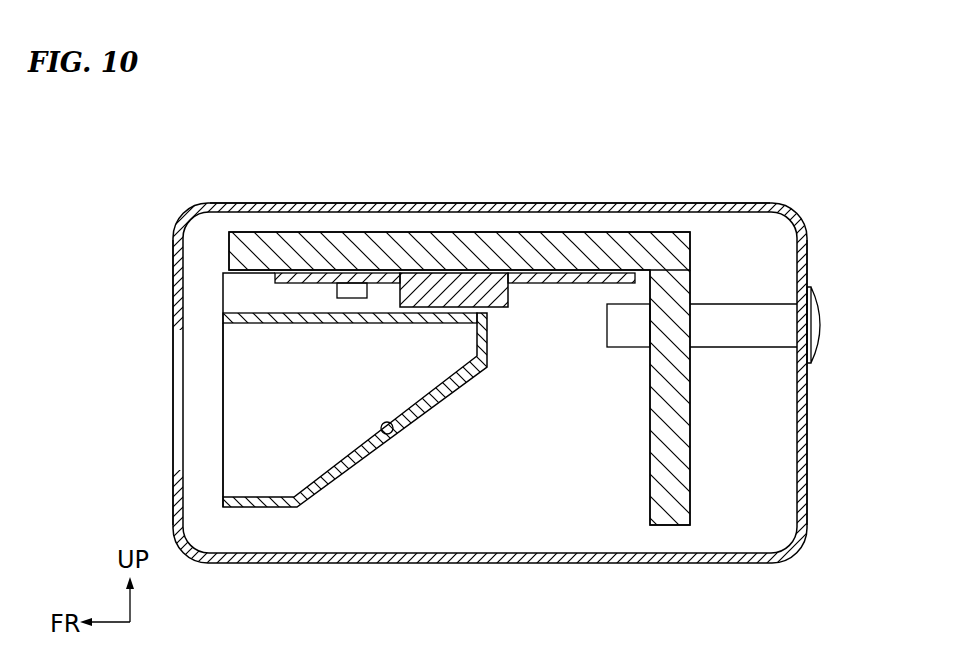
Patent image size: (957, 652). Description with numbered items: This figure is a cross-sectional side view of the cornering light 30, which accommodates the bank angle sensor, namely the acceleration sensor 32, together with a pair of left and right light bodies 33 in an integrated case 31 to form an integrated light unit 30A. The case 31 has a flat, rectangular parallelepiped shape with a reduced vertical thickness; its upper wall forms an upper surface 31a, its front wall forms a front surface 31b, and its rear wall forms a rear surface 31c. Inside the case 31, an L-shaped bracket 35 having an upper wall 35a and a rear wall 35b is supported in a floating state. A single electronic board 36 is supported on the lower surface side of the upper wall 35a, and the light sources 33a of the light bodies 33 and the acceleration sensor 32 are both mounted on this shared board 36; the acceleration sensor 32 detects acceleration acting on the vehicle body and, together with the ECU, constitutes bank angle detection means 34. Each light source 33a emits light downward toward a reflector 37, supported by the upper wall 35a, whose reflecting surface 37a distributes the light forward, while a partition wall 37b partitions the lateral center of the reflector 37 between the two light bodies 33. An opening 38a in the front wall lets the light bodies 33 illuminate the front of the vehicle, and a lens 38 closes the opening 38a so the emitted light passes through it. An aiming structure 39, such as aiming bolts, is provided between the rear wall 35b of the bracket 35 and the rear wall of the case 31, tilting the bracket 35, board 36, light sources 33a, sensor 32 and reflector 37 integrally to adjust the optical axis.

The cornering light 30 is at (178, 201).
The light unit 30A is at (473, 322).
The case 31 is at (230, 190).
The upper surface 31a is at (379, 202).
The front surface 31b is at (172, 283).
The rear surface 31c is at (808, 456).
The acceleration sensor 32 is at (471, 290).
The light bodies 33 is at (325, 207).
The light sources 33a is at (350, 287).
The bank angle detection means 34 is at (464, 202).
The bracket 35 is at (640, 220).
The upper wall 35a is at (416, 245).
The rear wall 35b is at (688, 422).
The electronic board 36 is at (568, 280).
The reflector 37 is at (460, 400).
The reflecting surface 37a is at (391, 433).
The partition wall 37b is at (238, 438).
The lens 38 is at (175, 389).
The opening 38a is at (178, 331).
The aiming structure 39 is at (820, 325).